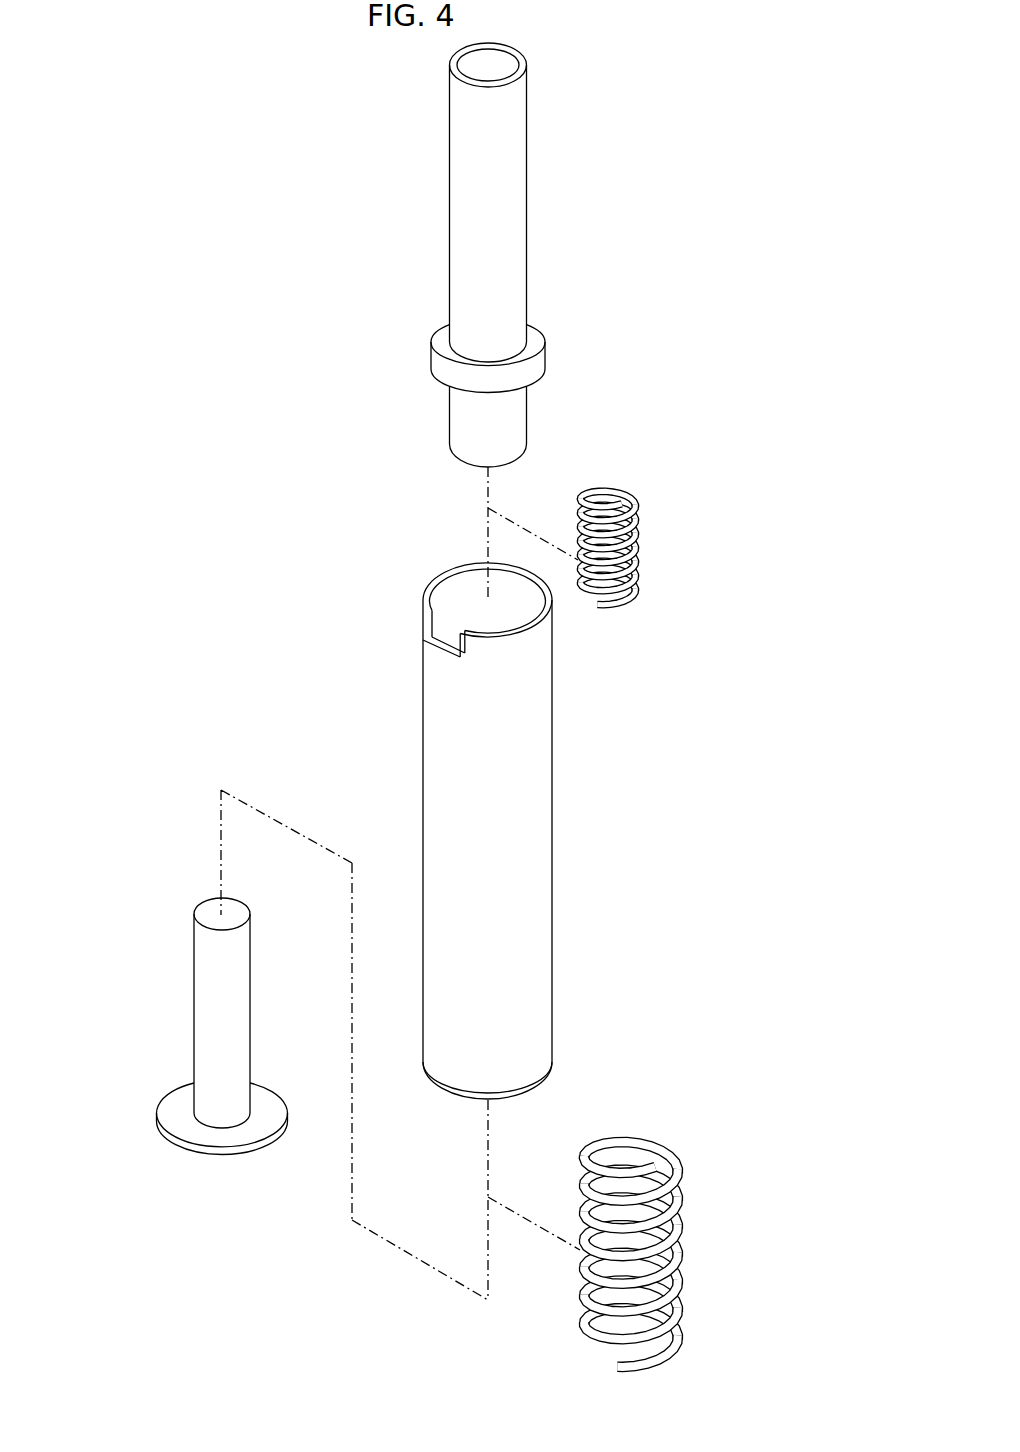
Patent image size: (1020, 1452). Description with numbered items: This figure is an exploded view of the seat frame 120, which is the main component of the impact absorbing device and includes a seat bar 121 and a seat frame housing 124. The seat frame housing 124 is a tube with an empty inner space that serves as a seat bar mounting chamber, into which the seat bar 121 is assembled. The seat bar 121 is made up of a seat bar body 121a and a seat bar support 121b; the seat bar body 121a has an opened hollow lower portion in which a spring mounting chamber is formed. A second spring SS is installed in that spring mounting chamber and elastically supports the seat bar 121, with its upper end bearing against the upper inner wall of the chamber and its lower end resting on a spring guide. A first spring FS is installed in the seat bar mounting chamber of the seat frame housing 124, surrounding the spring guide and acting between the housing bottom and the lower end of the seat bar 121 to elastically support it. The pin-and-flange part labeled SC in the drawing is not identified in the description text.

The seat frame 120 is at (627, 571).
The seat bar 121 is at (588, 255).
The seat bar body 121a is at (545, 359).
The seat bar support 121b is at (520, 206).
The seat frame housing 124 is at (555, 831).
The second spring SS is at (638, 558).
The first spring FS is at (680, 1220).
The screw SC is at (216, 980).